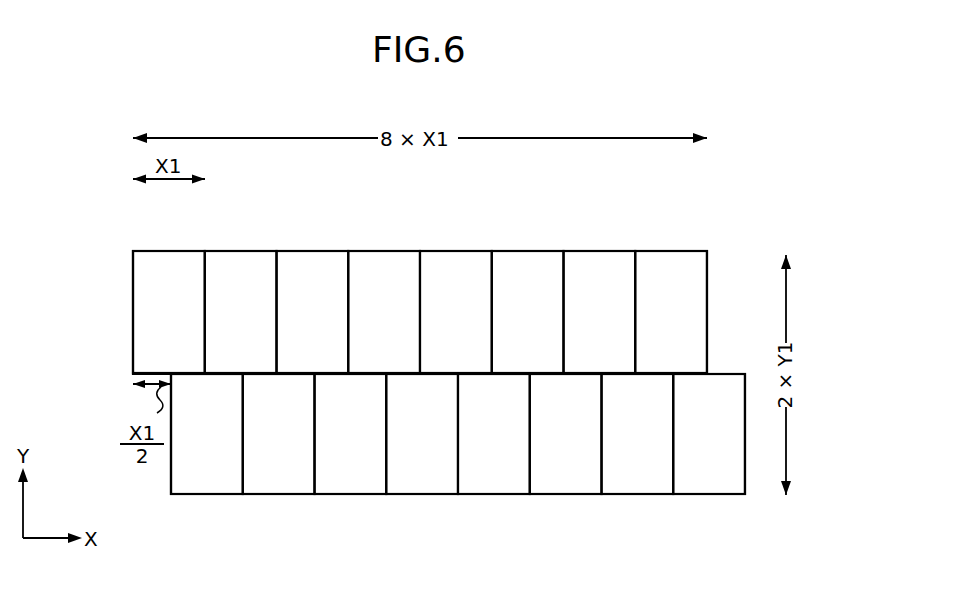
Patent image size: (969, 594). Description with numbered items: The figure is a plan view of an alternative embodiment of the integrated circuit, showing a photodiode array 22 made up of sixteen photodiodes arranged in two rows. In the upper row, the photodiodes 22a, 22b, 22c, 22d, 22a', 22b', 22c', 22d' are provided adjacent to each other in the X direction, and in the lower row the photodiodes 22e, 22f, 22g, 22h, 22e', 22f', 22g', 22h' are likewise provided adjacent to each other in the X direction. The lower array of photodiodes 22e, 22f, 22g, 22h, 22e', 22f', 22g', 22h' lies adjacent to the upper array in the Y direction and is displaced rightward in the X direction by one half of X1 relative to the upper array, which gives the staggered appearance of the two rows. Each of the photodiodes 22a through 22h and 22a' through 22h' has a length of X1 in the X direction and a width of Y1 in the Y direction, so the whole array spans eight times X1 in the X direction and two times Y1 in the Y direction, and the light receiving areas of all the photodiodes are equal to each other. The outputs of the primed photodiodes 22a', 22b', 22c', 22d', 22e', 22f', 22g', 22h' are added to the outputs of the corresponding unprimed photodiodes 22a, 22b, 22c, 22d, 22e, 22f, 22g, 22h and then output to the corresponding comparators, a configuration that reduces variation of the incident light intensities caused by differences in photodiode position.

The photodiode array 22 is at (720, 252).
The photodiode 22a is at (169, 288).
The photodiode 22b is at (241, 288).
The photodiode 22c is at (313, 288).
The photodiode 22d is at (384, 288).
The photodiode 22a' is at (456, 288).
The photodiode 22b' is at (528, 288).
The photodiode 22c' is at (600, 288).
The photodiode 22d' is at (671, 288).
The photodiode 22e is at (207, 463).
The photodiode 22f is at (279, 463).
The photodiode 22g is at (351, 463).
The photodiode 22h is at (422, 463).
The photodiode 22e' is at (494, 463).
The photodiode 22f' is at (566, 463).
The photodiode 22g' is at (638, 463).
The photodiode 22h' is at (709, 463).